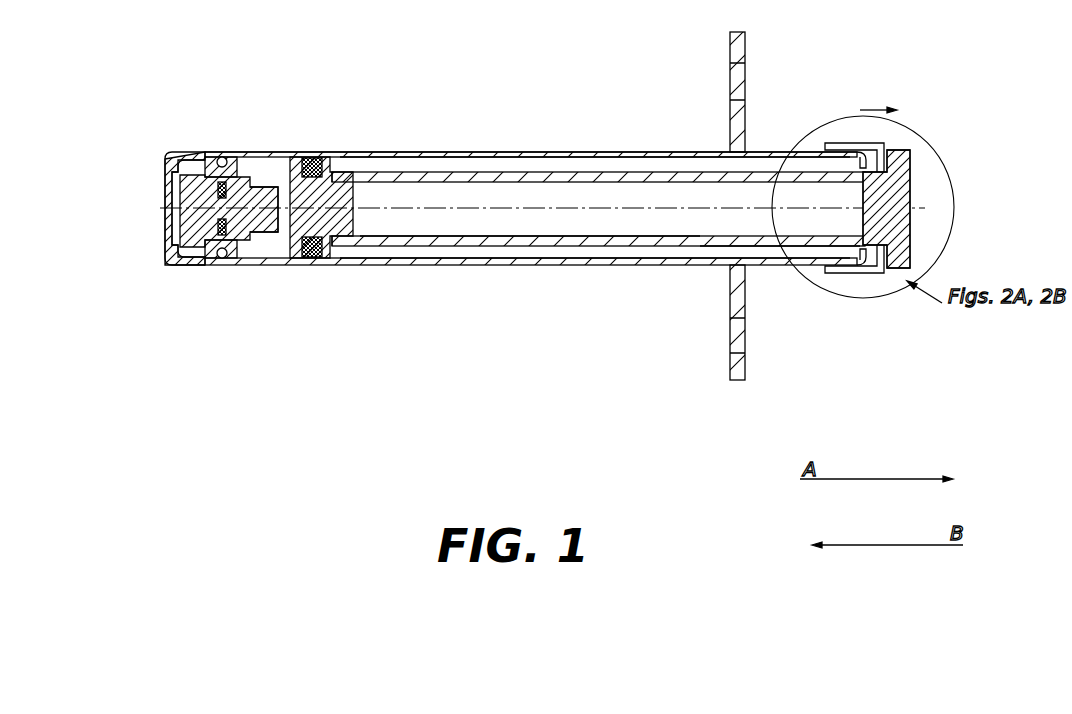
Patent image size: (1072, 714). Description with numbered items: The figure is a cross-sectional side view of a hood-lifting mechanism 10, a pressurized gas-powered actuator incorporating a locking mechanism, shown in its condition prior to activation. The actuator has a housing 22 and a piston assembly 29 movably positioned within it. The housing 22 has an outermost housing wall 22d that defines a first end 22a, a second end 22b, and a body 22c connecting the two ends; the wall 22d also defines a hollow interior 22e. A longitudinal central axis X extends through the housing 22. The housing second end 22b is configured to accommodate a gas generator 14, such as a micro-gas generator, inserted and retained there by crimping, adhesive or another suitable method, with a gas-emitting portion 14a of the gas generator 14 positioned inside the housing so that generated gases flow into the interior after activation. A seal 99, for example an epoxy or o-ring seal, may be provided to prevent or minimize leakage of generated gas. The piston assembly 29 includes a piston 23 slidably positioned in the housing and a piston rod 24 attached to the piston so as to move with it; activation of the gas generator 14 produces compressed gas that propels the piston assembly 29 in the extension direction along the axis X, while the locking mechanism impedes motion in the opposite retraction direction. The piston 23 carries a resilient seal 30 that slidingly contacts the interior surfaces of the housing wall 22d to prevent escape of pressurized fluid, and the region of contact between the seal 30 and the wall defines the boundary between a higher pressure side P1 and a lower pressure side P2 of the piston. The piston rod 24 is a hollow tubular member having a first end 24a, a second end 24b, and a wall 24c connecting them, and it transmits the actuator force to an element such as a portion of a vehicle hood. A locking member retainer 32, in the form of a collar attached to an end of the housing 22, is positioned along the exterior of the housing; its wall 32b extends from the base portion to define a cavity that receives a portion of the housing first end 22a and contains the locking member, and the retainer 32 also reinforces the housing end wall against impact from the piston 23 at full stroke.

The hood-lifting mechanism 10 is at (101, 290).
The gas generator 14 is at (240, 238).
The gas-emitting portion 14a is at (266, 232).
The housing 22 is at (618, 276).
The housing first end 22a is at (772, 150).
The housing second end 22b is at (225, 152).
The housing body 22c is at (577, 150).
The outermost housing wall 22d is at (487, 150).
The hollow interior 22e is at (650, 163).
The piston 23 is at (272, 152).
The piston rod 24 is at (561, 256).
The piston rod first end 24a is at (345, 242).
The piston rod second end 24b is at (758, 246).
The piston rod wall 24c is at (423, 232).
The piston assembly 29 is at (341, 152).
The seal 30 is at (308, 155).
The locking member retainer 32 is at (895, 131).
The retainer wall 32b is at (832, 143).
The seal 99 is at (219, 265).
The higher pressure side P1 is at (287, 250).
The lower pressure side P2 is at (378, 163).
The longitudinal central axis X is at (158, 205).